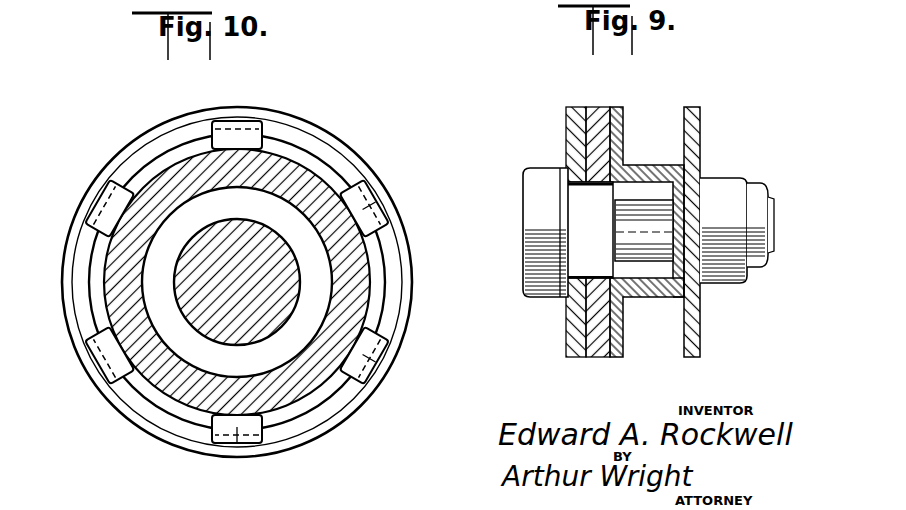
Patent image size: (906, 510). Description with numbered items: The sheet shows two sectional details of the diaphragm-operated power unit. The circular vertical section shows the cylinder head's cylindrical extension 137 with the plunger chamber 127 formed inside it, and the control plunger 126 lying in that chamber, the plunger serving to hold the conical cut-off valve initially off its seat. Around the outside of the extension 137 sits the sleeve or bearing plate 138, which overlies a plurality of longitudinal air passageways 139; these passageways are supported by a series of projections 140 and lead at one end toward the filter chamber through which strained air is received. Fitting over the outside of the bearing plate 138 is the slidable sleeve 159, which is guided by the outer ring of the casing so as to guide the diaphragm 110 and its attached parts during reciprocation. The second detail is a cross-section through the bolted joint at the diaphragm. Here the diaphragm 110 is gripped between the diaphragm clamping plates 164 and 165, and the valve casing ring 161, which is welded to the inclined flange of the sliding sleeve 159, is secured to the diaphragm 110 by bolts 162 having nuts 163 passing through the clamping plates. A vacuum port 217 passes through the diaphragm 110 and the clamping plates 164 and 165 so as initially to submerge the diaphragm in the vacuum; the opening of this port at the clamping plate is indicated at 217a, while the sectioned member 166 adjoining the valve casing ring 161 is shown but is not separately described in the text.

In FIG. 9, the diaphragm 110 is at (593, 108).
In FIG. 10, the control plunger 126 is at (244, 312).
In FIG. 10, the plunger chamber 127 is at (217, 205).
In FIG. 10, the cylindrical extension 137 is at (350, 300).
In FIG. 10, the bearing plate 138 is at (292, 131).
In FIG. 10, the longitudinal air passageways 139 is at (313, 160).
In FIG. 10, the projections 140 is at (229, 128).
In FIG. 10, the slidable sleeve 159 is at (278, 112).
In FIG. 9, the valve casing ring 161 is at (700, 121).
In FIG. 9, the bolts 162 is at (540, 256).
In FIG. 9, the nuts 163 is at (723, 265).
In FIG. 9, the diaphragm clamping plate 164 is at (567, 132).
In FIG. 9, the diaphragm clamping plate 165 is at (683, 279).
In FIG. 9, the bracket 166 is at (621, 120).
In FIG. 9, the vacuum ports 217 is at (585, 205).
In FIG. 9, the sleeve end 217a is at (641, 192).